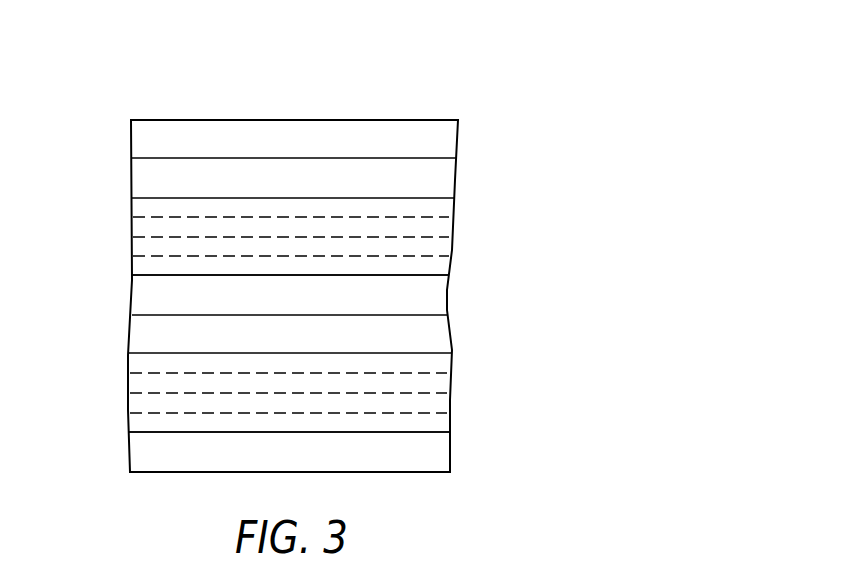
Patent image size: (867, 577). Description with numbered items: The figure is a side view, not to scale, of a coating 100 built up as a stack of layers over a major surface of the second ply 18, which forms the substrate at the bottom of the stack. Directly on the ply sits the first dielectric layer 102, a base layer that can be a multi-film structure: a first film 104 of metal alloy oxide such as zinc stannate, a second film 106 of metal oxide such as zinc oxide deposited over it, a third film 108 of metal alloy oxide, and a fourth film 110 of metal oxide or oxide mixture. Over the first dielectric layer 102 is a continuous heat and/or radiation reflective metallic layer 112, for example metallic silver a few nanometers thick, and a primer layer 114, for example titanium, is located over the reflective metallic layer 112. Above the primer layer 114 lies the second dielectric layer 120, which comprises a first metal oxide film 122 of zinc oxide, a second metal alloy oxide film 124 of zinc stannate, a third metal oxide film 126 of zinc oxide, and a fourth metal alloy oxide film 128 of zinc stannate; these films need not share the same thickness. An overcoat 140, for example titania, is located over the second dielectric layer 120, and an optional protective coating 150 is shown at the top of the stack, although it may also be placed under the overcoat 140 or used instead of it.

The coating 100 is at (478, 90).
The second ply 18 is at (437, 453).
The first dielectric layer 102 is at (122, 353).
The first film 104 is at (440, 422).
The second film 106 is at (445, 403).
The third film 108 is at (445, 387).
The fourth film 110 is at (445, 367).
The reflective metallic layer 112 is at (442, 335).
The primer layer 114 is at (445, 295).
The second dielectric layer 120 is at (122, 198).
The first metal oxide film 122 is at (450, 266).
The second metal alloy oxide film 124 is at (453, 250).
The third metal oxide film 126 is at (452, 226).
The fourth metal alloy oxide film 128 is at (452, 207).
The overcoat 140 is at (138, 179).
The protective coating 150 is at (138, 135).